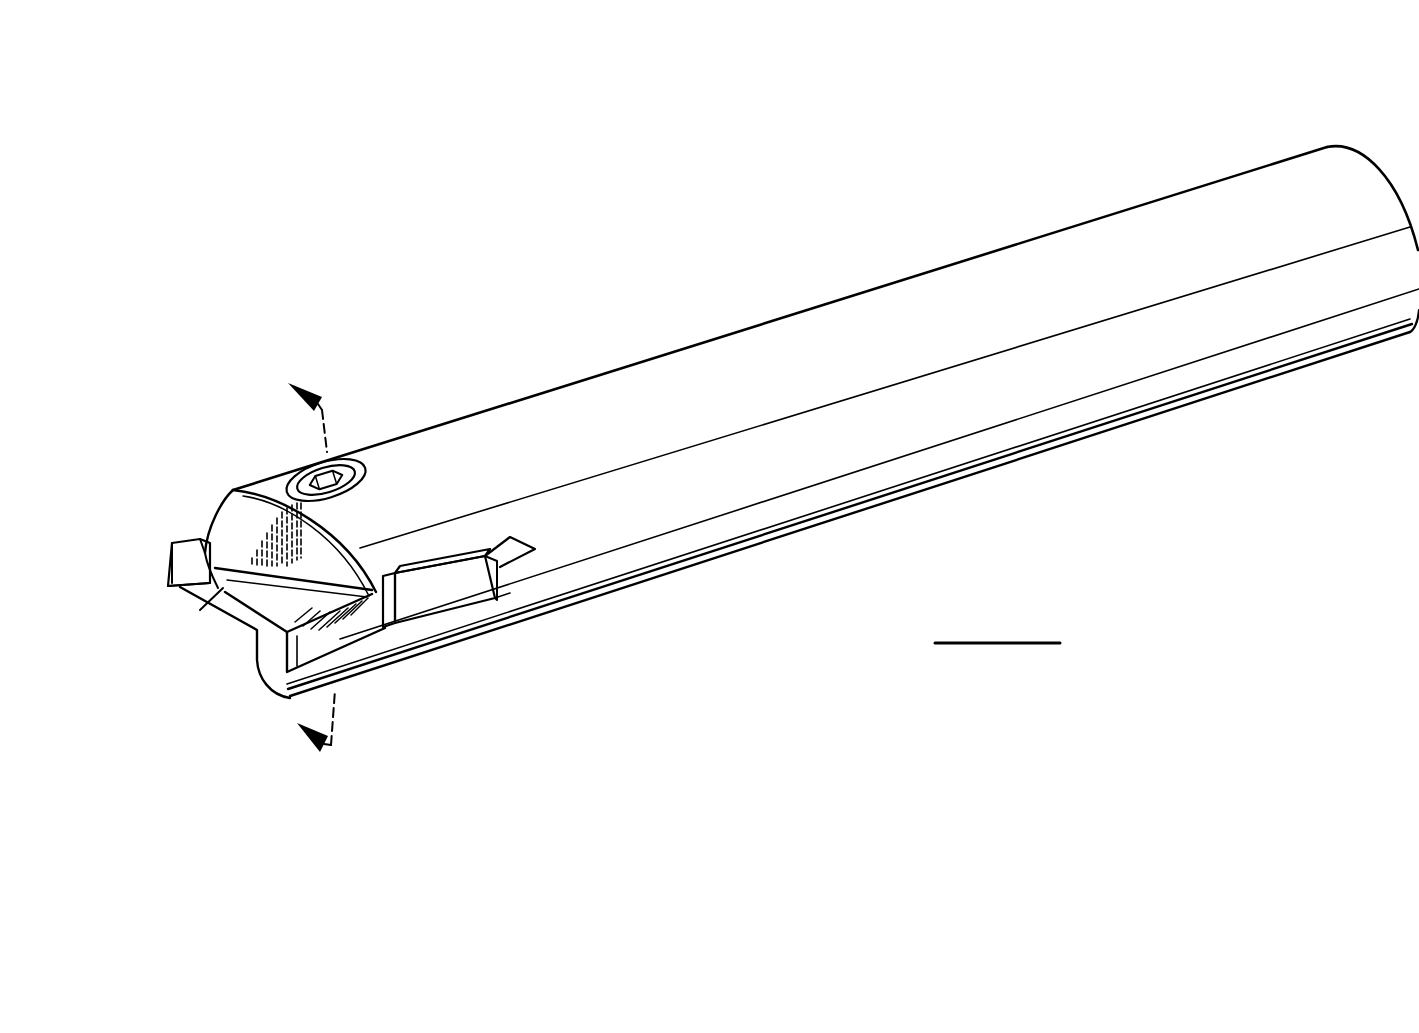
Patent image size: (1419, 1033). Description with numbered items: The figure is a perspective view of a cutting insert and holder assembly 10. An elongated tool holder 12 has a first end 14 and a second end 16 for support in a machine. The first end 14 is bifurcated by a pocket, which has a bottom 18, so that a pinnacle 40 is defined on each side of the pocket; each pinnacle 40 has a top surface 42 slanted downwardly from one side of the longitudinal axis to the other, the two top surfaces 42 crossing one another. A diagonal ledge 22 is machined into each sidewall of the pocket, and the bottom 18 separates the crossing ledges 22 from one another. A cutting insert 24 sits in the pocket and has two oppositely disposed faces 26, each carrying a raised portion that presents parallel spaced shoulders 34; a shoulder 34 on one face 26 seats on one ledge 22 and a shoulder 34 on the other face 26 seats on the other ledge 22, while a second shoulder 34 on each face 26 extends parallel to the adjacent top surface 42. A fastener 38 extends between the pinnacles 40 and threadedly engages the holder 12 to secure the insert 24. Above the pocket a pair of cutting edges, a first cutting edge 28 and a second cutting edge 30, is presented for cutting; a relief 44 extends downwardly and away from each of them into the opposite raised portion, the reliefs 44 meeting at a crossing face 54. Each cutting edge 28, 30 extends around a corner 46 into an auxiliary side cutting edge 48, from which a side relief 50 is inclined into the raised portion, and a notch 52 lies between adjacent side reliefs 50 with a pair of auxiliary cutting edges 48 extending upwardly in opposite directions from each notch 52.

The cutting insert and holder assembly 10 is at (508, 232).
The tool holder 12 is at (740, 304).
The first end 14 is at (416, 420).
The second end 16 is at (1290, 392).
The bottom 18 is at (505, 578).
The diagonal ledge 22 is at (535, 548).
The cutting insert 24 is at (168, 590).
The face 26 is at (270, 611).
The first cutting edge 28 is at (312, 600).
The second cutting edge 30 is at (205, 598).
The shoulder 34 is at (190, 545).
The fastener 38 is at (347, 472).
The pinnacle 40 is at (276, 481).
The top surface 42 is at (236, 489).
The relief 44 is at (170, 572).
The corner 46 is at (175, 543).
The auxiliary side cutting edge 48 is at (360, 594).
The side relief 50 is at (474, 565).
The notch 52 is at (405, 608).
The crossing face 54 is at (218, 620).